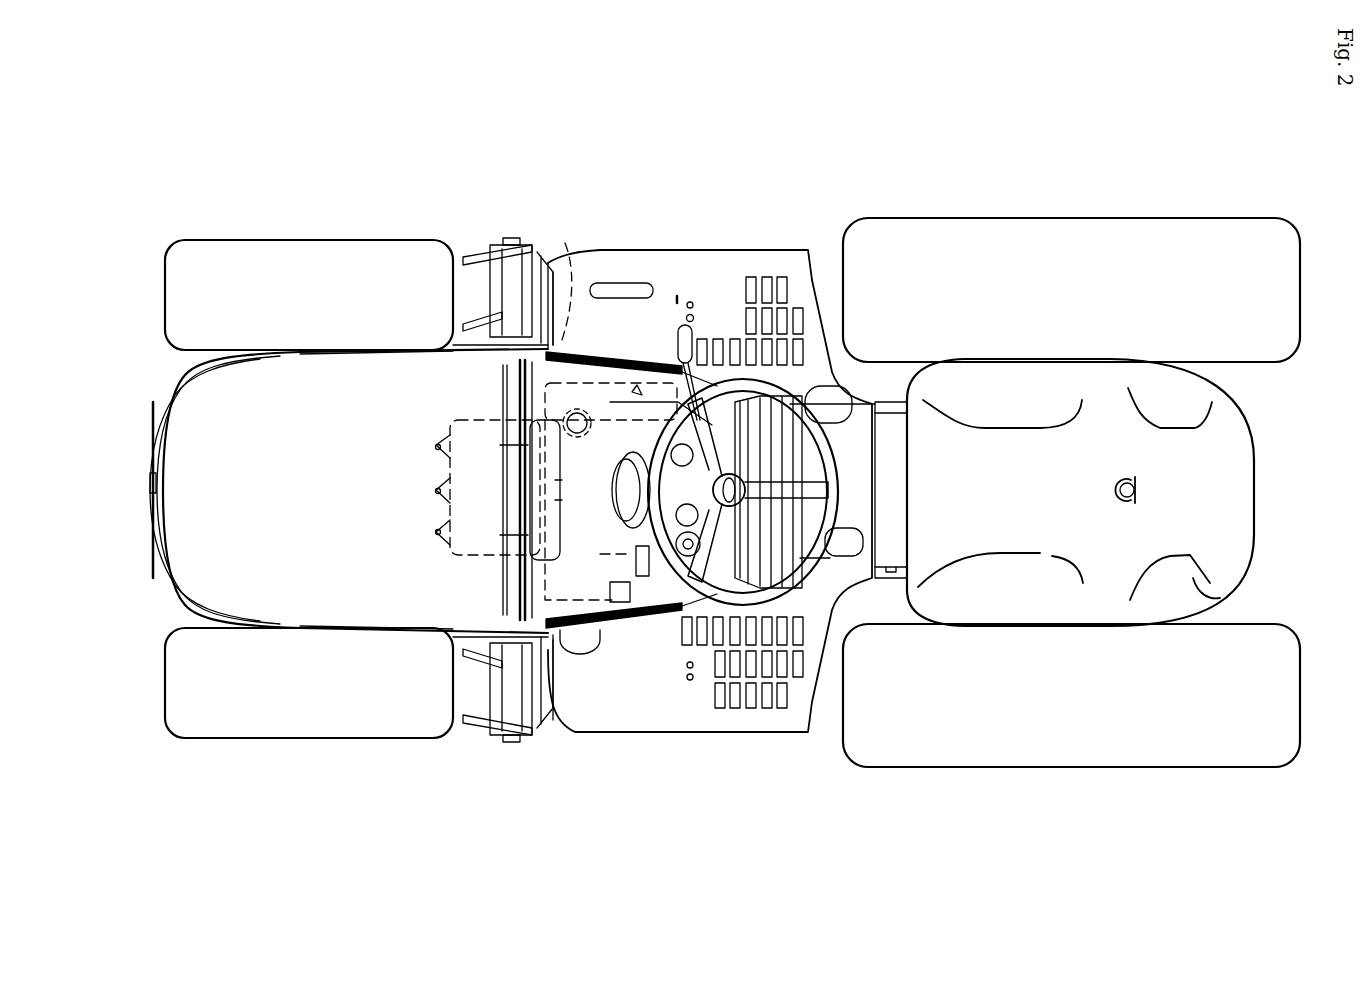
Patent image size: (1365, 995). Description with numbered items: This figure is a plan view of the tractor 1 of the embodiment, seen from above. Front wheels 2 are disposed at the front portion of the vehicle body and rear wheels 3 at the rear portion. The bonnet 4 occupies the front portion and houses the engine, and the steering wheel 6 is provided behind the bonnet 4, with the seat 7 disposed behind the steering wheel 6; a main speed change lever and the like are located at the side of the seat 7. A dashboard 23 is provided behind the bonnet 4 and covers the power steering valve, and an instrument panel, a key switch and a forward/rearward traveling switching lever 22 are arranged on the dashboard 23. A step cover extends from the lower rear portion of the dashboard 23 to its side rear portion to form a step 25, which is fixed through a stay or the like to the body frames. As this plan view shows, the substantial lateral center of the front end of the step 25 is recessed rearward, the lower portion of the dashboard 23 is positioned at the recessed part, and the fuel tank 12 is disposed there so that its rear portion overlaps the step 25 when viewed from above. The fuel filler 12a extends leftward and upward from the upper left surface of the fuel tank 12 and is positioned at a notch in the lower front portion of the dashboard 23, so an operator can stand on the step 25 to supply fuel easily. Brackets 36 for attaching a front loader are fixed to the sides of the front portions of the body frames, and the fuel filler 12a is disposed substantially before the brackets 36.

The tractor 1 is at (295, 158).
The front wheels 2 is at (324, 313).
The rear wheels 3 is at (1084, 309).
The bonnet 4 is at (324, 500).
The steering wheel 6 is at (741, 380).
The seat 7 is at (1027, 506).
The fuel tank 12 is at (560, 275).
The fuel filler 12a is at (580, 657).
The forward/rearward traveling switching lever 22 is at (682, 332).
The dashboard 23 is at (627, 352).
The step 25 is at (647, 689).
The brackets 36 is at (487, 247).